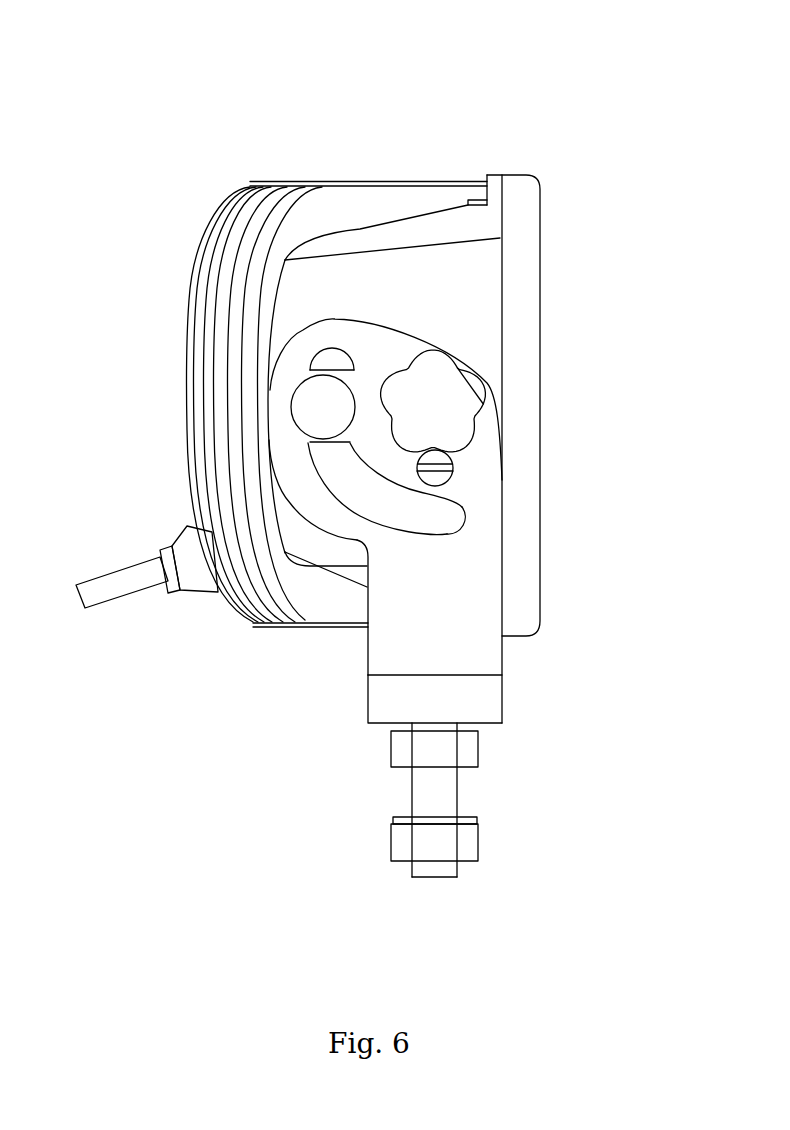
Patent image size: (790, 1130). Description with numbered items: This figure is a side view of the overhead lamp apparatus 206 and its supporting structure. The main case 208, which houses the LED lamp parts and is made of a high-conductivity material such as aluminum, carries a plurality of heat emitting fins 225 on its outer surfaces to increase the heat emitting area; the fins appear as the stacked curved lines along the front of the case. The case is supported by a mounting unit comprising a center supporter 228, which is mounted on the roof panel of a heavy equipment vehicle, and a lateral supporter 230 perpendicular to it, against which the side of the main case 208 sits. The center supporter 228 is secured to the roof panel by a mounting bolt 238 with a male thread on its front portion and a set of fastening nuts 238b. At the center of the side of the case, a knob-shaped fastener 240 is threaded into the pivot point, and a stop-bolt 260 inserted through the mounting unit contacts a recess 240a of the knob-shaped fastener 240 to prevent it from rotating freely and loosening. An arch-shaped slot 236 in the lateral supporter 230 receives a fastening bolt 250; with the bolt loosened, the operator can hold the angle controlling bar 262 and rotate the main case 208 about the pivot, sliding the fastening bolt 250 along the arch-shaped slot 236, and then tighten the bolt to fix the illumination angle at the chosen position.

The lamp apparatus 206 is at (310, 133).
The heat emitting fins 225 is at (252, 188).
The main case 208 is at (318, 597).
The arch-shaped slot 236 is at (442, 518).
The fastening bolt 250 is at (312, 400).
The knob-shaped fastener 240 is at (445, 402).
The recess 240a is at (462, 372).
The stop-bolt 260 is at (440, 481).
The lateral supporter 230 is at (472, 637).
The center supporter 228 is at (472, 702).
The mounting bolt 238 is at (433, 792).
The fastening nuts 238b is at (442, 840).
The angle controlling bar 262 is at (128, 587).